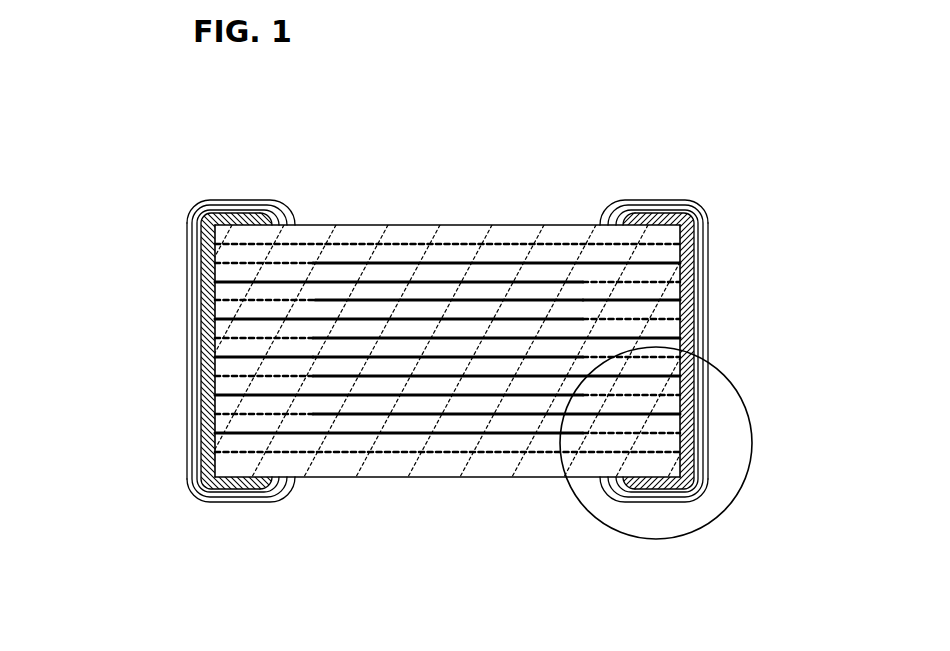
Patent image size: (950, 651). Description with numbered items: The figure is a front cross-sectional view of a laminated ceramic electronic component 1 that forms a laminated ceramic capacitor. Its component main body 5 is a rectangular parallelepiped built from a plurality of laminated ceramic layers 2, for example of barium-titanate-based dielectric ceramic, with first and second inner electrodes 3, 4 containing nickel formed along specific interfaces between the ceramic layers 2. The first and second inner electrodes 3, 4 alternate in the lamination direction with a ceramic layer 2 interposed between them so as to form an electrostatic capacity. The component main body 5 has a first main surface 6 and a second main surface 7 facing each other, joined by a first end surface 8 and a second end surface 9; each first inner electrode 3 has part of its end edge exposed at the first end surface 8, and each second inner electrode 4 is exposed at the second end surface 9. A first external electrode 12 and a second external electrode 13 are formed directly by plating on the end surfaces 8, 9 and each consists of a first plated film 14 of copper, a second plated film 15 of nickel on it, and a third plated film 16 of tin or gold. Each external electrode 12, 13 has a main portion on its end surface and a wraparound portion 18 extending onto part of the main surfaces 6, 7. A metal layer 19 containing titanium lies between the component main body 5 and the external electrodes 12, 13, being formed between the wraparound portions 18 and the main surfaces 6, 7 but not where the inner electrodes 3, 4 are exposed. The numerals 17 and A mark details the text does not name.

The laminated ceramic electronic component 1 is at (131, 112).
The ceramic layers 2 is at (393, 272).
The first inner electrode 3 is at (457, 320).
The second inner electrode 4 is at (530, 298).
The component main body 5 is at (575, 214).
The first main surface 6 is at (465, 223).
The second main surface 7 is at (450, 477).
The first end surface 8 is at (216, 348).
The second end surface 9 is at (683, 293).
The first external electrode 12 is at (82, 227).
The second external electrode 13 is at (700, 250).
The first plated film 14 is at (207, 244).
The second plated film 15 is at (193, 278).
The third plated film 16 is at (187, 310).
The side portion of external electrode 17 is at (176, 413).
The wraparound portion 18 is at (238, 191).
The metal layer 19 is at (256, 213).
The region A is at (745, 417).